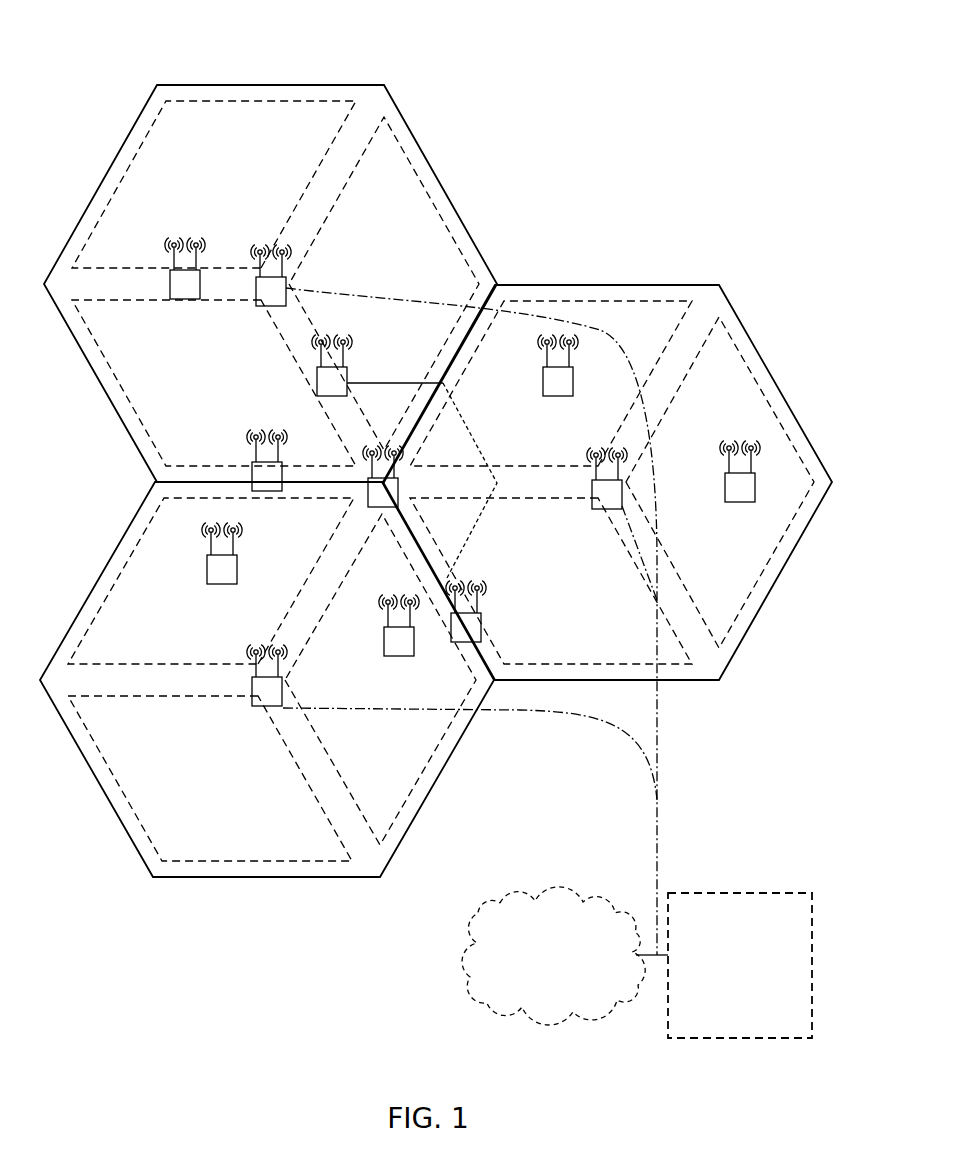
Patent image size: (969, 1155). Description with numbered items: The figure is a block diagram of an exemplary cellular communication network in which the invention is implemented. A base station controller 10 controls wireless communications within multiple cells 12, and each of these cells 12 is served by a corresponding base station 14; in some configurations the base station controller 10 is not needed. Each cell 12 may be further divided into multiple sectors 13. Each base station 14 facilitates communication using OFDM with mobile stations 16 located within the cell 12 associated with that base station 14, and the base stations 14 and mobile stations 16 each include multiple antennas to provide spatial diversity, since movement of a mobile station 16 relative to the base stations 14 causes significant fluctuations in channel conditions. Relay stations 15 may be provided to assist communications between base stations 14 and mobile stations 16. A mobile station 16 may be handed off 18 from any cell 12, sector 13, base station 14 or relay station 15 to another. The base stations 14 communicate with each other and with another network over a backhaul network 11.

The base station controller 10 is at (727, 990).
The backhaul network 11 is at (542, 980).
The cell 12 is at (271, 85).
The sector 13 is at (180, 130).
The base station 14 is at (257, 308).
The relay station 15 is at (317, 394).
The mobile station 16 is at (170, 298).
The handoff 18 is at (392, 383).